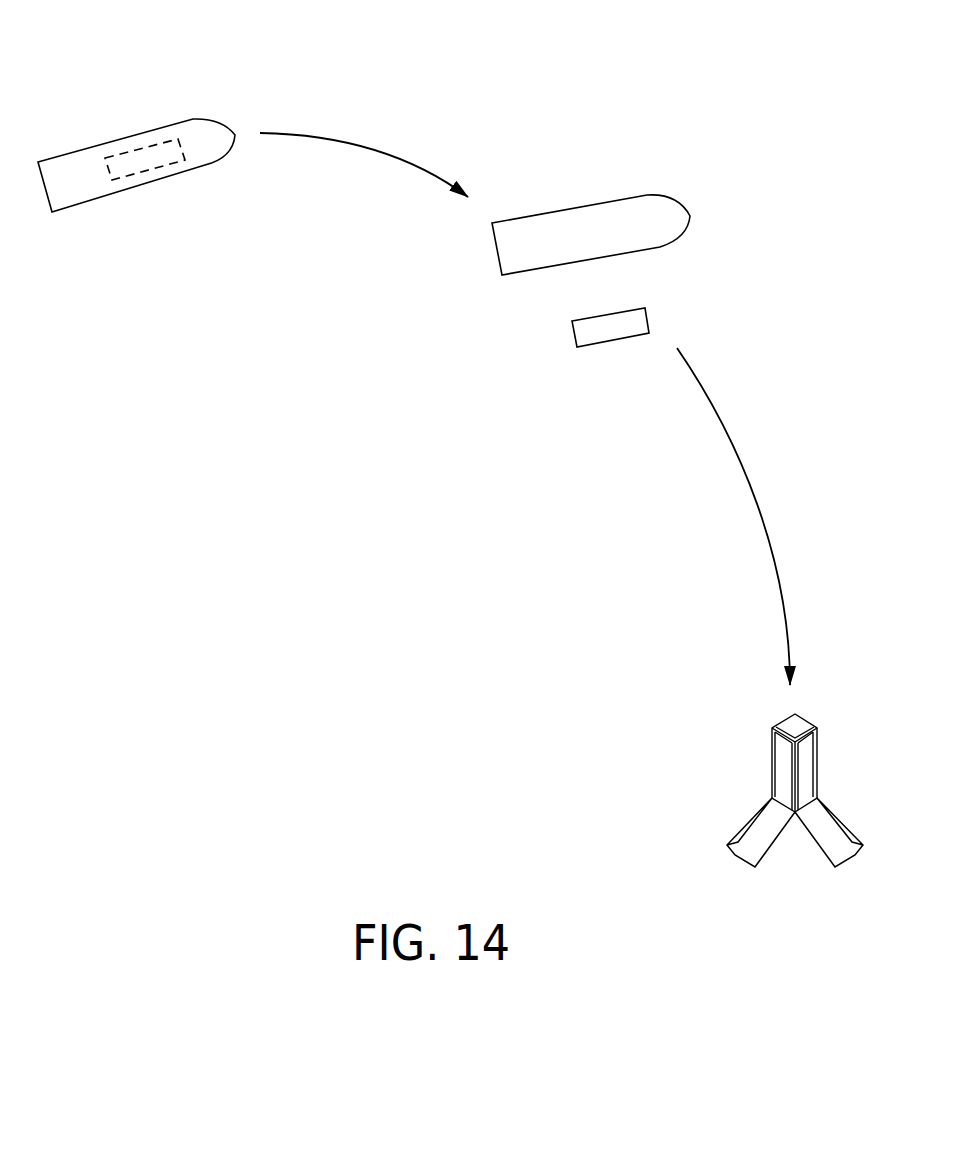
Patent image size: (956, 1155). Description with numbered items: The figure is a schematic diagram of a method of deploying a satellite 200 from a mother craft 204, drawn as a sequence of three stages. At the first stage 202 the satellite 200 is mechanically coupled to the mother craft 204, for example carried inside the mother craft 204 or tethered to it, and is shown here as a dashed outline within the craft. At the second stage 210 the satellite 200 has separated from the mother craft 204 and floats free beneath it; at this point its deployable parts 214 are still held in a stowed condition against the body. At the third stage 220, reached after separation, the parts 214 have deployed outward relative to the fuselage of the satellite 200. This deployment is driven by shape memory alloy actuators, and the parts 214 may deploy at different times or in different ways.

The satellite 200 is at (148, 167).
The initial coupled stage 202 is at (137, 110).
The mother craft 204 is at (72, 192).
The separation stage 210 is at (540, 353).
The deployable parts 214 is at (813, 840).
The deployment stage 220 is at (713, 868).